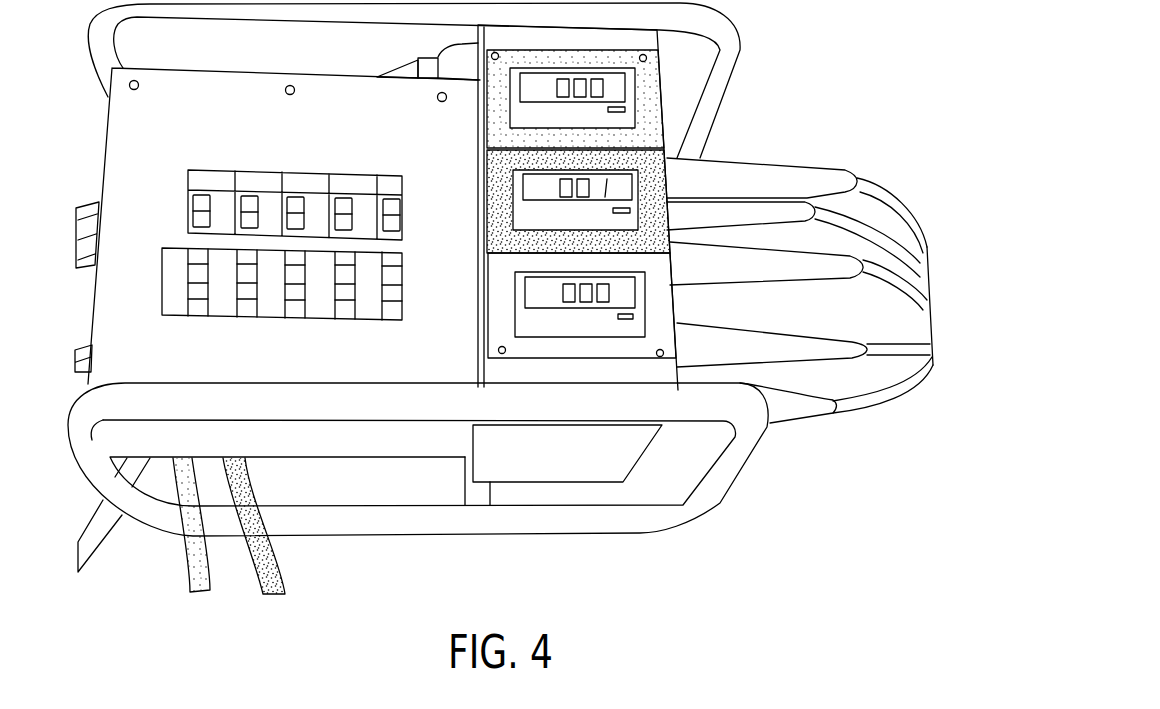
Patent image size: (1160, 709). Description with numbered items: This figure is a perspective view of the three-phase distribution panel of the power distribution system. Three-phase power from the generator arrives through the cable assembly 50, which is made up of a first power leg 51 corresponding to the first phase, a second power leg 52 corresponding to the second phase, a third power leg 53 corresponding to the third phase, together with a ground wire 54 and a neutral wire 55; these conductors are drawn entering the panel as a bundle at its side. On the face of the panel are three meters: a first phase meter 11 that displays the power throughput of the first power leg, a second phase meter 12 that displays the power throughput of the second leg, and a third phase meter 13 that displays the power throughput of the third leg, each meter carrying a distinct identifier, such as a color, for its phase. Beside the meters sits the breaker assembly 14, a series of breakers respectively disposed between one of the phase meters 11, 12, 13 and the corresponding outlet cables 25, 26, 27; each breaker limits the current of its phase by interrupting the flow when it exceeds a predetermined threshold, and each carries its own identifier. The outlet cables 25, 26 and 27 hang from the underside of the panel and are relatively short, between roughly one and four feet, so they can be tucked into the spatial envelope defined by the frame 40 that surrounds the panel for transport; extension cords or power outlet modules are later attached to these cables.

The first phase meter 11 is at (667, 197).
The second phase meter 12 is at (658, 104).
The third phase meter 13 is at (673, 305).
The breaker assembly 14 is at (227, 318).
The outlet cable 25 is at (277, 581).
The outlet cable 26 is at (198, 553).
The outlet cable 27 is at (93, 540).
The frame 40 is at (693, 510).
The cable assembly 50 is at (828, 290).
The first power leg 51 is at (868, 185).
The second power leg 52 is at (910, 287).
The third power leg 53 is at (910, 348).
The ground wire 54 is at (908, 390).
The neutral wire 55 is at (893, 240).